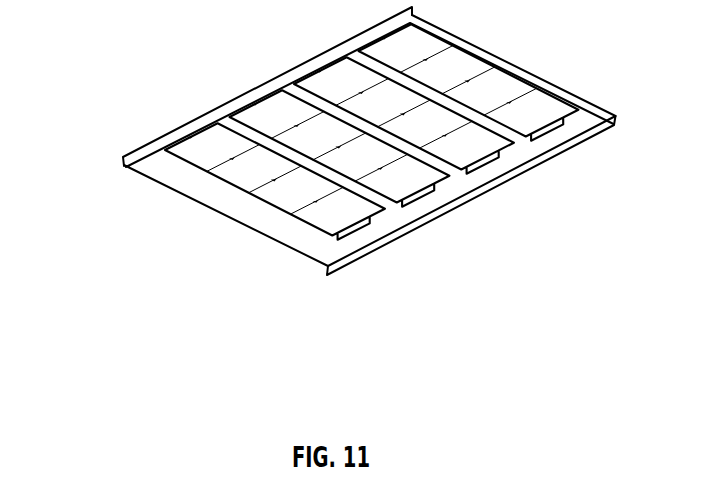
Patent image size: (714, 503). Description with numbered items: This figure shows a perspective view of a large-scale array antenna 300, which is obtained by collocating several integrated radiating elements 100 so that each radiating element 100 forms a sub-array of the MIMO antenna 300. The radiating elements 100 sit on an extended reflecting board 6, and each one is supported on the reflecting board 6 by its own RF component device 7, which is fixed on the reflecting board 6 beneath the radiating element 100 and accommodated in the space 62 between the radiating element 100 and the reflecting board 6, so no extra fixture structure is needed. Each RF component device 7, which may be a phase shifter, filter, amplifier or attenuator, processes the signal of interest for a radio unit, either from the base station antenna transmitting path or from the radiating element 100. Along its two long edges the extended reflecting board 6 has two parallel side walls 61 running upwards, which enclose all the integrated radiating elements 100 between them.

The large-scale array antenna 300 is at (90, 73).
The reflecting board 6 is at (265, 218).
The side walls 61 is at (150, 147).
The space 62 is at (226, 191).
The RF component device 7 is at (362, 228).
The integrated radiating element 100 is at (518, 113).